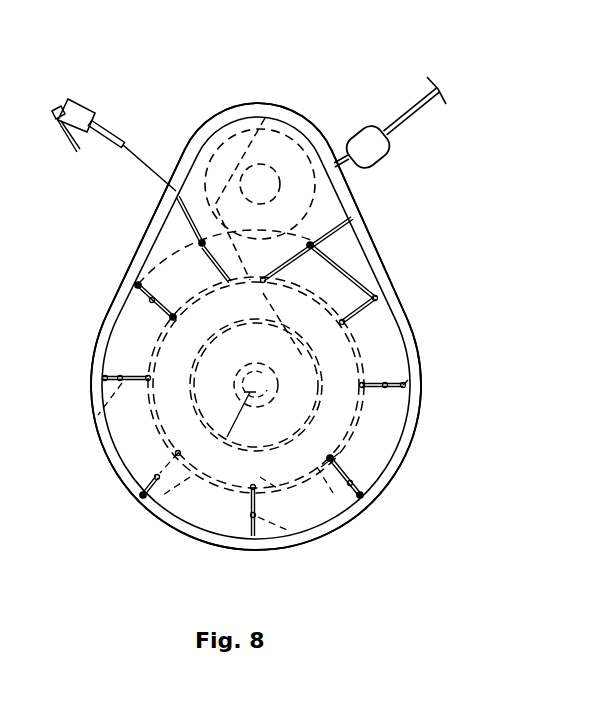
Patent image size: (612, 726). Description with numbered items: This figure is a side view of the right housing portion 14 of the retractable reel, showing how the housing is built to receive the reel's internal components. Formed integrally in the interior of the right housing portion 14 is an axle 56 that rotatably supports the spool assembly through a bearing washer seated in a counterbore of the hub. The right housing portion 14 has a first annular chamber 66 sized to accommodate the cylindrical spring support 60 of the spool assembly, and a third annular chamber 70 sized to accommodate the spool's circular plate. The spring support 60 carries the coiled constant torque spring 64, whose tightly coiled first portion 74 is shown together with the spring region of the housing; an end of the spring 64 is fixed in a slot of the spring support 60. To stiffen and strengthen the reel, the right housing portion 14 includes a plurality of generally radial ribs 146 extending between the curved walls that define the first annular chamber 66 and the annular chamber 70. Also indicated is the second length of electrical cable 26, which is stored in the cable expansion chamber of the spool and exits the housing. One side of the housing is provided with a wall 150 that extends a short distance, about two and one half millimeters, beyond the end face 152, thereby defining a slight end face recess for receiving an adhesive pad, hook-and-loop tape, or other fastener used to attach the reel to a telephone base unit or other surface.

The right housing portion 14 is at (92, 482).
The second length of electrical cable 26 is at (143, 163).
The axle 56 is at (150, 500).
The spring support 60 is at (380, 328).
The coiled constant torque spring 64 is at (282, 105).
The first annular chamber 66 is at (365, 502).
The third annular chamber 70 is at (167, 527).
The first portion of the spring 74 is at (200, 132).
The radial ribs 146 is at (92, 417).
The wall 150 is at (357, 223).
The end face 152 is at (352, 252).